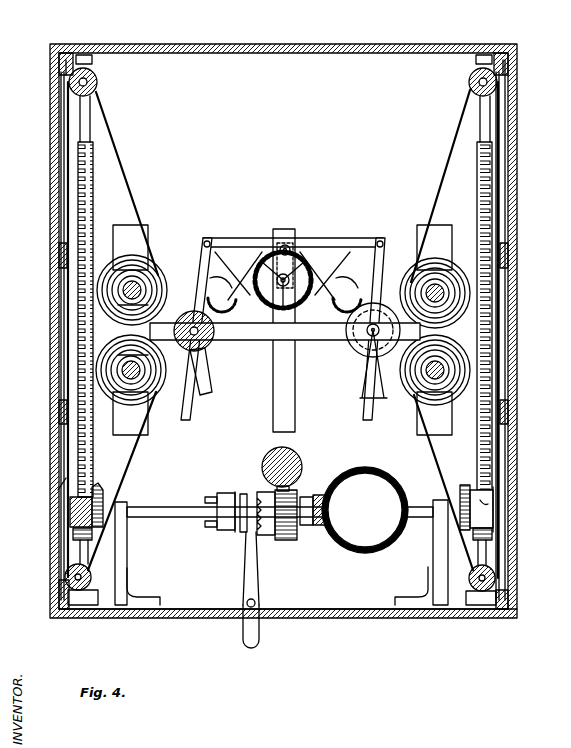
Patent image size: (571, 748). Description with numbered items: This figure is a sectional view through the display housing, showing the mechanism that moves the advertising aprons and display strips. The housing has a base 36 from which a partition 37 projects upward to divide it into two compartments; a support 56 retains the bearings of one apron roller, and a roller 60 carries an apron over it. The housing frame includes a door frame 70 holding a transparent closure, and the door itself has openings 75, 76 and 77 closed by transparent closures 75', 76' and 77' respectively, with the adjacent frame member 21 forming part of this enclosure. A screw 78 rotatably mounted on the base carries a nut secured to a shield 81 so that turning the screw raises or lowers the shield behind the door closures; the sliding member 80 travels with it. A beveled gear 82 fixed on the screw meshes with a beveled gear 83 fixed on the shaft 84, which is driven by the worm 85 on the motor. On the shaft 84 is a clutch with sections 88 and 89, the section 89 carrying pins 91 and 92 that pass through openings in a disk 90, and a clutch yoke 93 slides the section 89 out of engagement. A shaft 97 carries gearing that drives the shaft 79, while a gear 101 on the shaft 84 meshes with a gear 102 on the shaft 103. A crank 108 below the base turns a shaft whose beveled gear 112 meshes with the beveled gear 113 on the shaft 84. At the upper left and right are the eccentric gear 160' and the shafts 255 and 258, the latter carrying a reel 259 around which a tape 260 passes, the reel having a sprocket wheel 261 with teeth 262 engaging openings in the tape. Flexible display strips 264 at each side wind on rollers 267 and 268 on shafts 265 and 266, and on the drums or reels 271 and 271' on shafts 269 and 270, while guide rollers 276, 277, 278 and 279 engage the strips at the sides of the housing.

The frame side member 21 is at (568, 182).
The base 36 is at (330, 618).
The partition 37 is at (333, 73).
The support 56 is at (448, 414).
The roller 60 is at (565, 110).
The door frame 70 is at (530, 614).
The opening 75 is at (531, 330).
The transparent closure 75' is at (277, 115).
The opening 76 is at (525, 336).
The transparent closure 76' is at (279, 336).
The opening 77 is at (305, 593).
The transparent closure 77' is at (286, 517).
The screw 78 is at (486, 425).
The shaft 79 is at (55, 68).
The carriage block 80 is at (494, 500).
The shield 81 is at (496, 460).
The beveled gear 82 is at (470, 531).
The beveled gear 83 is at (472, 482).
The shaft 84 is at (172, 518).
The worm 85 is at (263, 464).
The clutch section 88 is at (285, 541).
The clutch section 89 is at (250, 500).
The disk 90 is at (226, 531).
The pin 91 is at (215, 522).
The pin 92 is at (212, 496).
The clutch yoke 93 is at (240, 542).
The shaft 97 is at (258, 580).
The gear 101 is at (96, 500).
The gear 102 is at (82, 534).
The shaft 103 is at (120, 565).
The crank 108 is at (312, 526).
The beveled gear 112 is at (362, 553).
The beveled gear 113 is at (320, 492).
The gear 160' is at (301, 321).
The shaft 255 is at (373, 335).
The shaft 258 is at (208, 345).
The reel 259 is at (364, 398).
The tape 260 is at (100, 356).
The sprocket wheel 261 is at (196, 352).
The teeth 262 is at (190, 392).
The flexible display strip 264 is at (76, 182).
The shaft 265 is at (445, 298).
The shaft 266 is at (440, 378).
The roller 267 is at (438, 256).
The roller 268 is at (468, 364).
The shaft 269 is at (132, 290).
The shaft 270 is at (110, 396).
The drum or reel 271 is at (154, 244).
The spool bracket 271' is at (75, 414).
The guide roller 276 is at (468, 85).
The guide roller 277 is at (462, 600).
The guide roller 278 is at (78, 592).
The guide roller 279 is at (98, 85).